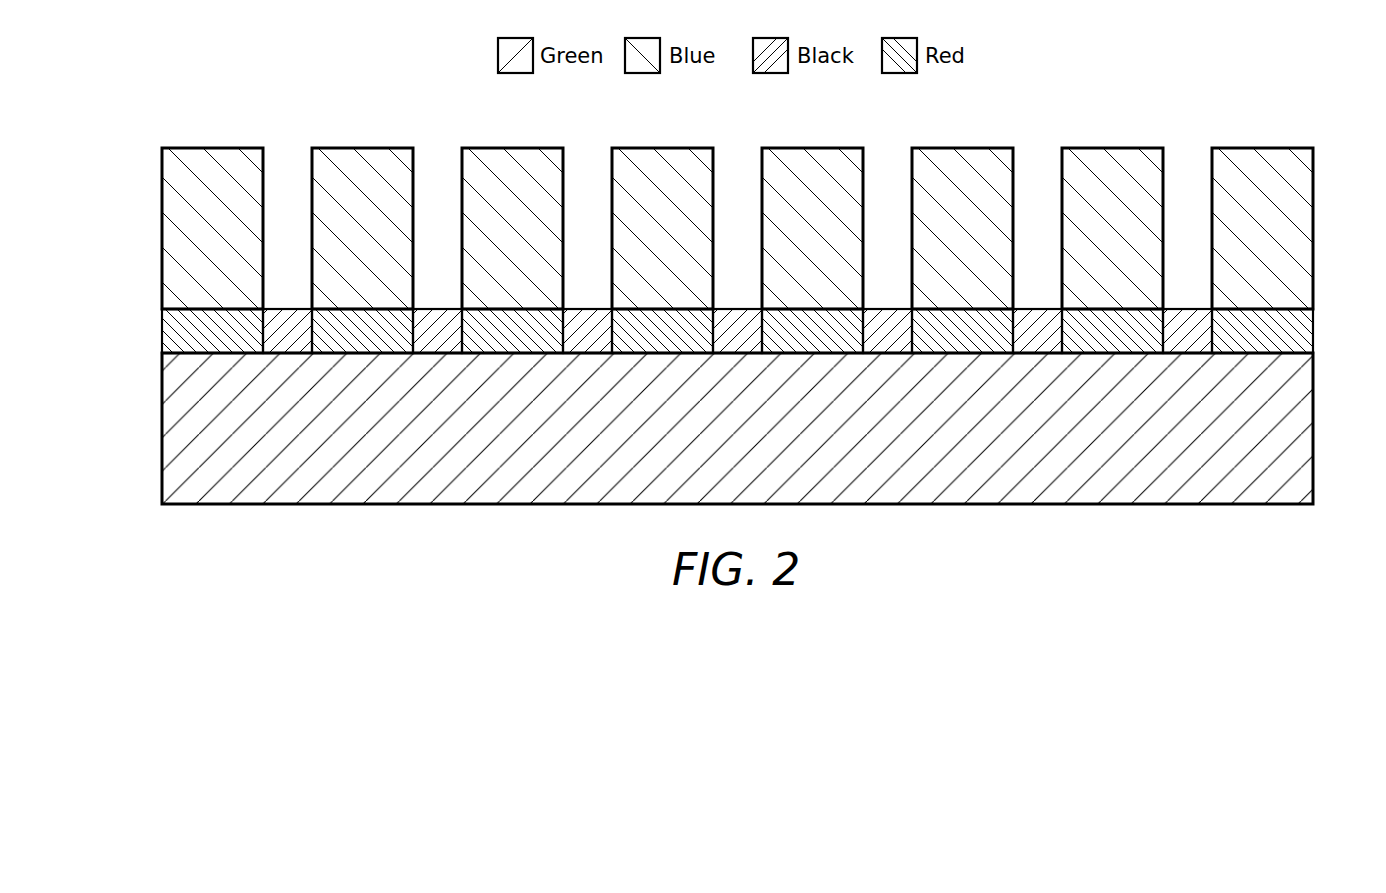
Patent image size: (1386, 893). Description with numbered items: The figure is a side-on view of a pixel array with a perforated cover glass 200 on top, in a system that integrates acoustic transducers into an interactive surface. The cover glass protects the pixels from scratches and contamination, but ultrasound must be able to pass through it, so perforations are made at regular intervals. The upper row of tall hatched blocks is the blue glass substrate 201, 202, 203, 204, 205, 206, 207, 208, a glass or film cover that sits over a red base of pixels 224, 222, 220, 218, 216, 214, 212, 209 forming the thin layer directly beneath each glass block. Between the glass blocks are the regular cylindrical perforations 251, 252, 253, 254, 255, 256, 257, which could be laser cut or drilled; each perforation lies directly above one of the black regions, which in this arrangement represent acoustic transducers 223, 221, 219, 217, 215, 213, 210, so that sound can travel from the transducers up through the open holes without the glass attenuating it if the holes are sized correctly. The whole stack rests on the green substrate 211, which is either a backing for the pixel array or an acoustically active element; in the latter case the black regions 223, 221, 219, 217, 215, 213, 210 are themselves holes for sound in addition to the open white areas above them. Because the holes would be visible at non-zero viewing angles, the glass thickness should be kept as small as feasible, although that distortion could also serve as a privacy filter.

The cover glass 200 is at (235, 535).
The glass substrate section 201 is at (210, 153).
The glass substrate section 202 is at (360, 153).
The glass substrate section 203 is at (510, 153).
The glass substrate section 204 is at (660, 153).
The glass substrate section 205 is at (810, 153).
The glass substrate section 206 is at (960, 153).
The glass substrate section 207 is at (1110, 153).
The glass substrate section 208 is at (1260, 153).
The pixel 209 is at (1307, 332).
The acoustic transducer 210 is at (1191, 345).
The substrate 211 is at (1285, 493).
The pixel 212 is at (1115, 345).
The acoustic transducer 213 is at (1041, 345).
The pixel 214 is at (965, 345).
The acoustic transducer 215 is at (891, 345).
The pixel 216 is at (815, 345).
The acoustic transducer 217 is at (741, 345).
The pixel 218 is at (665, 345).
The acoustic transducer 219 is at (591, 345).
The pixel 220 is at (515, 345).
The acoustic transducer 221 is at (441, 345).
The pixel 222 is at (365, 345).
The acoustic transducer 223 is at (291, 345).
The pixel 224 is at (168, 332).
The perforation 251 is at (287, 188).
The perforation 252 is at (437, 188).
The perforation 253 is at (587, 188).
The perforation 254 is at (737, 188).
The perforation 255 is at (887, 188).
The perforation 256 is at (1037, 188).
The perforation 257 is at (1187, 188).